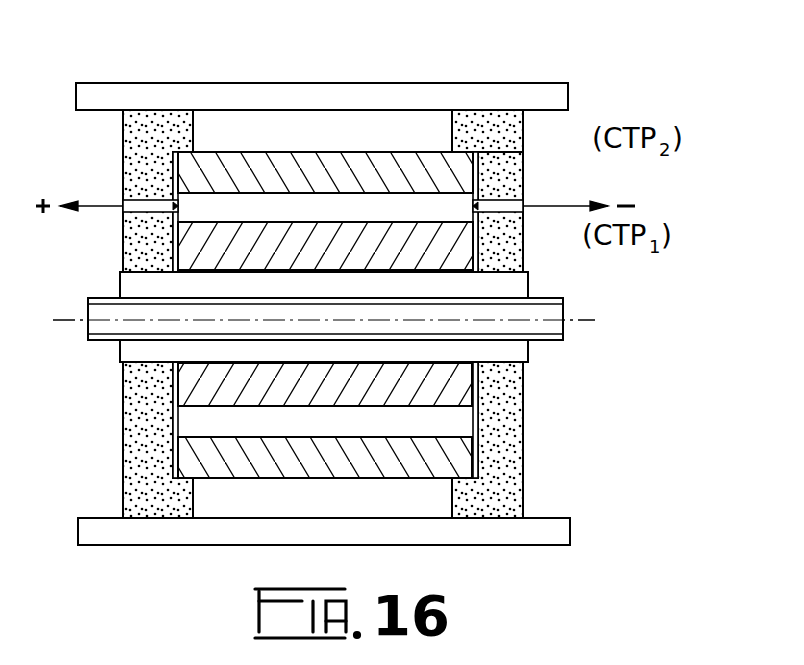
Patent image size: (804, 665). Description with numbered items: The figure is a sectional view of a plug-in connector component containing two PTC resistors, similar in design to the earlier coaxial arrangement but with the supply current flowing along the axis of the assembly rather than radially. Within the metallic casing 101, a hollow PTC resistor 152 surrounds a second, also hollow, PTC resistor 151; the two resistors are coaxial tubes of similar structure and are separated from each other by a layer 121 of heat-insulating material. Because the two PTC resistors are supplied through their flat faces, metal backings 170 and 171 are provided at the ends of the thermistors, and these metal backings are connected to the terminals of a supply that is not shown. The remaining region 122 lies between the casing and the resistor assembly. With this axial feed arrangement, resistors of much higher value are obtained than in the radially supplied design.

The metallic casing 101 is at (258, 83).
The space between end plate and winding 122 is at (433, 118).
The second PTC resistor 151 is at (460, 167).
The hollow PTC resistor 152 is at (455, 249).
The layer of heat-insulating material 121 is at (463, 203).
The metal backing 170 is at (513, 453).
The metal backing 171 is at (131, 430).